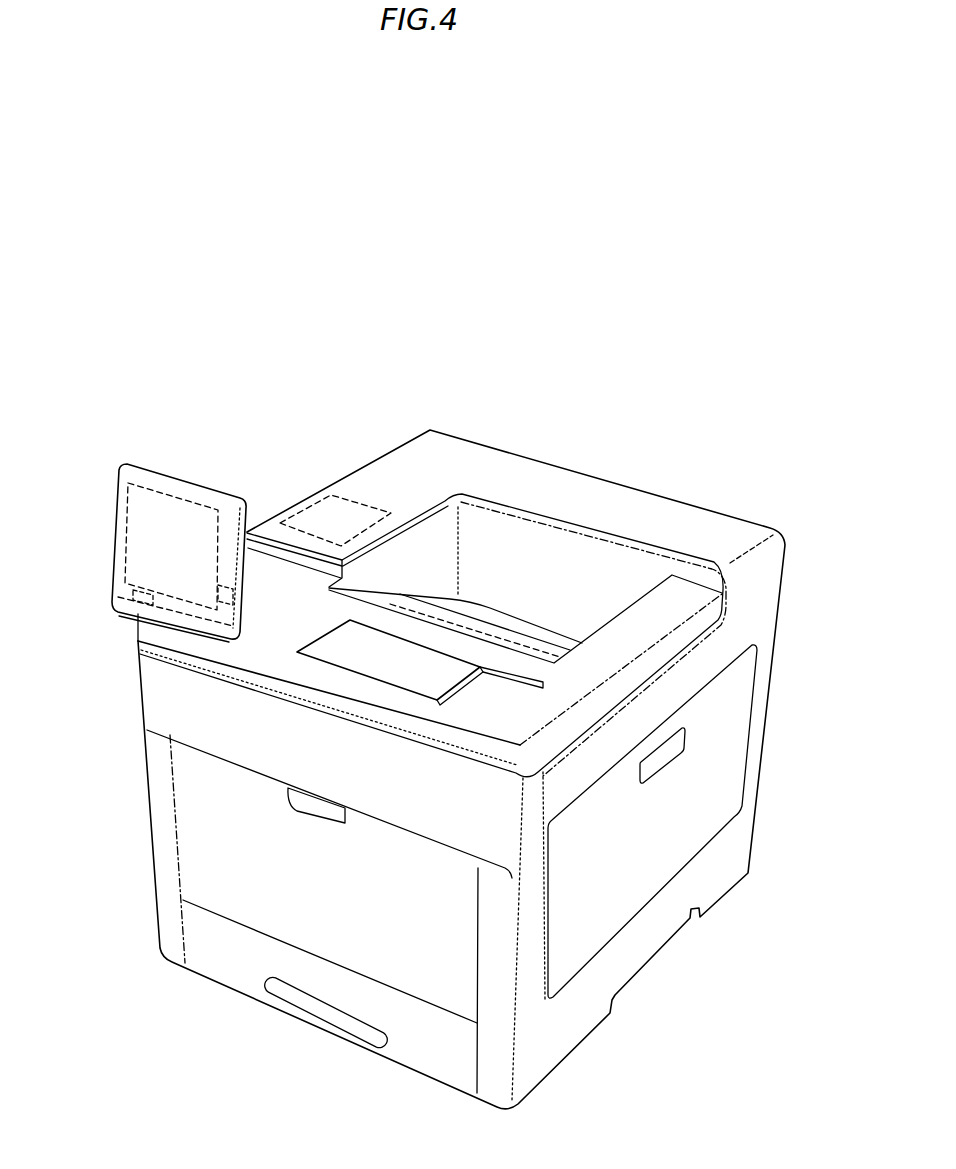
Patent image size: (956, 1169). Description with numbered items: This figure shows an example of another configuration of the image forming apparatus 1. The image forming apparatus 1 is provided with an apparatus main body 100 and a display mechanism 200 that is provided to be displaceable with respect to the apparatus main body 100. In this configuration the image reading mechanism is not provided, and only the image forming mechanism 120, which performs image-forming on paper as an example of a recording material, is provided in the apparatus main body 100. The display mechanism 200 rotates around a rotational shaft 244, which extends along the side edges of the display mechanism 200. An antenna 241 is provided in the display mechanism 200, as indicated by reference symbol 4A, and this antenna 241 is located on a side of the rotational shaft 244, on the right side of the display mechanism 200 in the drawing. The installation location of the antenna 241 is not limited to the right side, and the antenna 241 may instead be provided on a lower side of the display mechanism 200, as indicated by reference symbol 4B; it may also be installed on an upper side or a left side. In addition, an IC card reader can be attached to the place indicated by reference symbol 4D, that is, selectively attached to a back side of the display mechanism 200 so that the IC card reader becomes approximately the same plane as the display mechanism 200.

The image forming apparatus 1 is at (735, 433).
The apparatus main body 100 is at (762, 610).
The image forming mechanism 120 is at (700, 827).
The display mechanism 200 is at (121, 440).
The reference symbol indicating antenna location on right side 4A is at (197, 576).
The reference symbol indicating antenna location on lower side 4B is at (139, 573).
The reference symbol indicating IC card reader attachment place 4D is at (355, 502).
The antenna 241 is at (130, 593).
The rotational shaft 244 is at (137, 628).